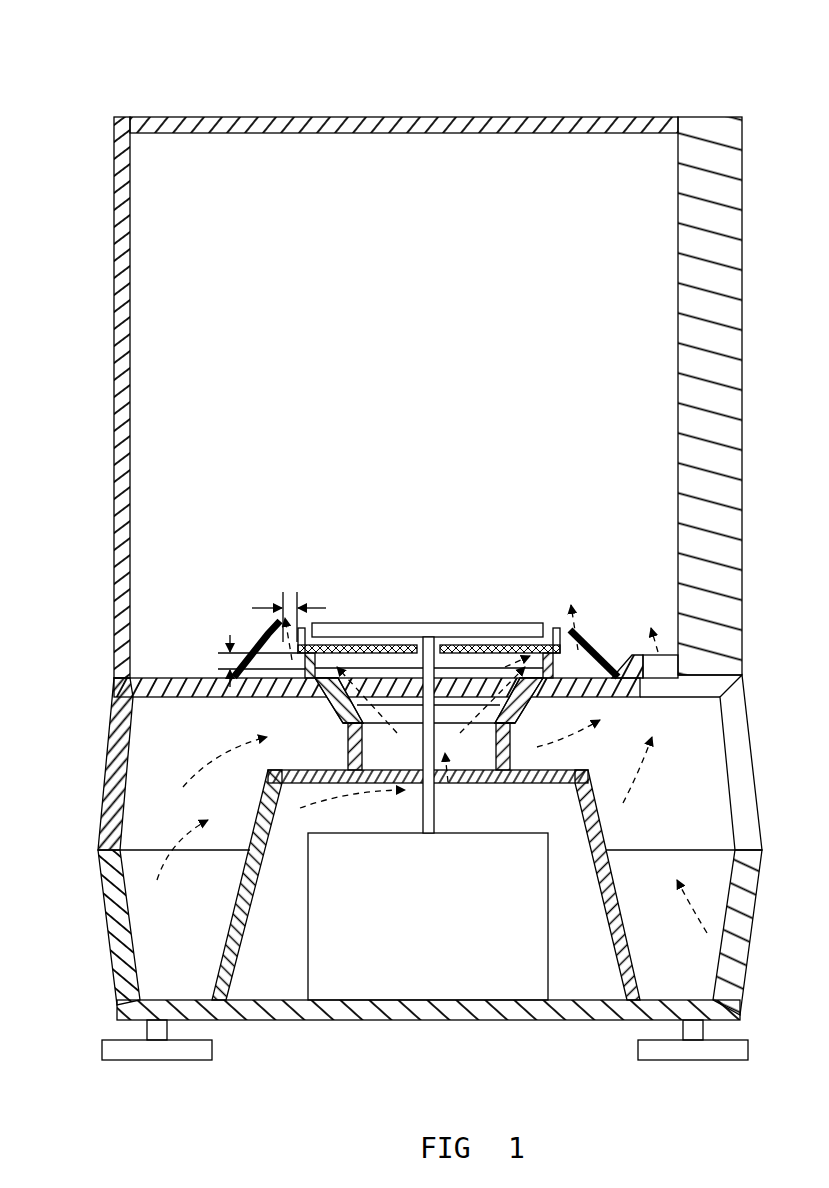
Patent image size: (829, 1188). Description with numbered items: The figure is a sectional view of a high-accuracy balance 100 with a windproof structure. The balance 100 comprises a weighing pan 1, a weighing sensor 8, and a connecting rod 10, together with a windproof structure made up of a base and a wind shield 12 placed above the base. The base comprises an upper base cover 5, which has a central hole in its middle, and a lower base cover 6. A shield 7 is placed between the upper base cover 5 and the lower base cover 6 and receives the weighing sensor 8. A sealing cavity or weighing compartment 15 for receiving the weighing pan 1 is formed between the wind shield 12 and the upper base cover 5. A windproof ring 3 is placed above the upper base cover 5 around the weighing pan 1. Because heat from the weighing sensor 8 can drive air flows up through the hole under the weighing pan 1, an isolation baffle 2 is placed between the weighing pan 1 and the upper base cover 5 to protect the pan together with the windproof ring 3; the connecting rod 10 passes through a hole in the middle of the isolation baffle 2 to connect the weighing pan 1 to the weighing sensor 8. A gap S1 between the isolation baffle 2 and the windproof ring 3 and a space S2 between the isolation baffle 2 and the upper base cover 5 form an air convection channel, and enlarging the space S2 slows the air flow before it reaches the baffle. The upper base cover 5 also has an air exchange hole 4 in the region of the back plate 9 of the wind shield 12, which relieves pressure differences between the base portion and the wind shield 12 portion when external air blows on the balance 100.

The balance 100 is at (736, 58).
The weighing pan 1 is at (468, 622).
The isolation baffle 2 is at (343, 650).
The windproof ring 3 is at (262, 650).
The air exchange hole 4 is at (668, 687).
The upper base cover 5 is at (110, 738).
The lower base cover 6 is at (108, 940).
The shield 7 is at (243, 883).
The weighing sensor 8 is at (540, 938).
The back plate 9 is at (742, 387).
The connecting rod 10 is at (437, 790).
The wind shield 12 is at (118, 338).
The sealing cavity/weighing compartment 15 is at (431, 346).
The gap S1 is at (289, 603).
The space S2 is at (246, 661).